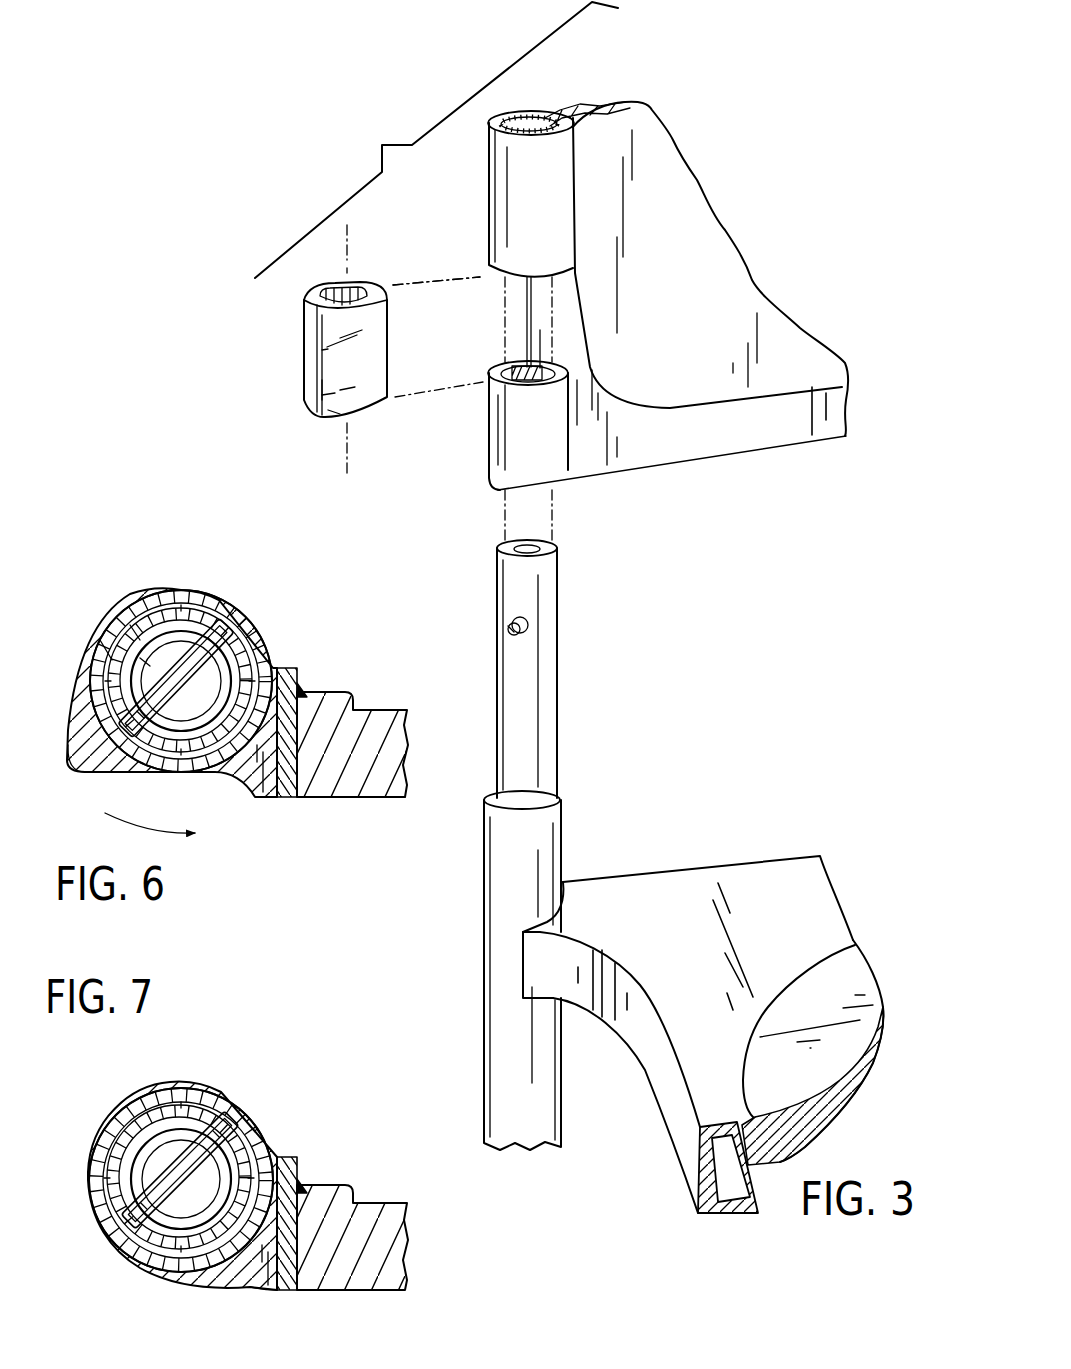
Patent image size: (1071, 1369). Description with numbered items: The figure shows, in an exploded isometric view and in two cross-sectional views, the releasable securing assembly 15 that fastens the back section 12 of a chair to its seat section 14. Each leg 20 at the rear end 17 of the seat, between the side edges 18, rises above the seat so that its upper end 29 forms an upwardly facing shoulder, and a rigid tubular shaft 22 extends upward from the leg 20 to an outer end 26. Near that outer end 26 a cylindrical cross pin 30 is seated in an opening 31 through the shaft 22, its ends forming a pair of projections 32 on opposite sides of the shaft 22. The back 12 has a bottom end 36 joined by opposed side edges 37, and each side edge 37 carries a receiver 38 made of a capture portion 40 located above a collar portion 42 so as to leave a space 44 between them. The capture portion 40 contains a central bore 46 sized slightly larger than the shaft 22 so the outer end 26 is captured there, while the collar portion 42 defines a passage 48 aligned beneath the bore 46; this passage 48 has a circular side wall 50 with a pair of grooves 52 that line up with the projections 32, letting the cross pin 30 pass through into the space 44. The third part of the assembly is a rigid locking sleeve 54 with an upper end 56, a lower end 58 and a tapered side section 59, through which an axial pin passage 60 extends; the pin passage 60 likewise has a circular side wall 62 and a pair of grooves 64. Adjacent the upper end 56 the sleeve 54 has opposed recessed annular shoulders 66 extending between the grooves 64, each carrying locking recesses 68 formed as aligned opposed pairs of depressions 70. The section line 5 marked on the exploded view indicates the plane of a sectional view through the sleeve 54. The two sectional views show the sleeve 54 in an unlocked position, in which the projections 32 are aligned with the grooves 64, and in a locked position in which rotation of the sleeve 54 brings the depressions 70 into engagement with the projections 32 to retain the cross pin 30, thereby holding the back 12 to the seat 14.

In FIG. 3, the section line 5- 5 is at (353, 235).
In FIG. 3, the back section 12 is at (870, 955).
In FIG. 6, the back section 12 is at (373, 800).
In FIG. 7, the back section 12 is at (385, 1298).
In FIG. 3, the seat section 14 is at (758, 270).
In FIG. 3, the releasable securing assembly 15 is at (436, 140).
In FIG. 3, the rear end 17 is at (684, 863).
In FIG. 3, the side edges 18 is at (667, 1110).
In FIG. 3, the legs 20 is at (483, 968).
In FIG. 3, the shaft 22 is at (558, 672).
In FIG. 6, the shaft 22 is at (135, 681).
In FIG. 7, the shaft 22 is at (230, 1187).
In FIG. 3, the outer end 26 is at (555, 545).
In FIG. 3, the upper end 29 is at (560, 792).
In FIG. 3, the cross pin 30 is at (534, 614).
In FIG. 6, the cross pin 30 is at (140, 658).
In FIG. 3, the opening 31 is at (512, 615).
In FIG. 3, the projections 32 is at (515, 626).
In FIG. 6, the projections 32 is at (124, 730).
In FIG. 7, the projections 32 is at (217, 1115).
In FIG. 3, the bottom end 36 is at (698, 462).
In FIG. 3, the side edges 37 is at (488, 126).
In FIG. 3, the receivers 38 is at (484, 247).
In FIG. 3, the capture portion 40 is at (527, 227).
In FIG. 3, the collar portion 42 is at (497, 445).
In FIG. 6, the collar portion 42 is at (250, 789).
In FIG. 7, the collar portion 42 is at (280, 1154).
In FIG. 3, the space 44 is at (520, 310).
In FIG. 3, the central bore 46 is at (545, 115).
In FIG. 3, the passage 48 is at (495, 352).
In FIG. 3, the side wall 50 is at (545, 365).
In FIG. 3, the grooves 52 is at (508, 360).
In FIG. 3, the locking sleeve 54 is at (300, 366).
In FIG. 6, the locking sleeve 54 is at (90, 623).
In FIG. 7, the locking sleeve 54 is at (110, 1092).
In FIG. 3, the upper end 56 is at (303, 297).
In FIG. 3, the lower end 58 is at (330, 398).
In FIG. 3, the tapered side section 59 is at (333, 412).
In FIG. 6, the tapered side section 59 is at (65, 748).
In FIG. 7, the tapered side section 59 is at (248, 1290).
In FIG. 3, the axial pin passage 60 is at (333, 294).
In FIG. 6, the side wall 62 is at (190, 713).
In FIG. 7, the side wall 62 is at (187, 1205).
In FIG. 3, the grooves 64 is at (393, 285).
In FIG. 6, the grooves 64 is at (207, 620).
In FIG. 7, the grooves 64 is at (127, 1137).
In FIG. 6, the recessed annular shoulders 66 is at (190, 617).
In FIG. 7, the recessed annular shoulders 66 is at (173, 1100).
In FIG. 6, the locking recesses 68 is at (133, 633).
In FIG. 6, the depressions 70 is at (120, 623).
In FIG. 7, the depressions 70 is at (221, 1127).